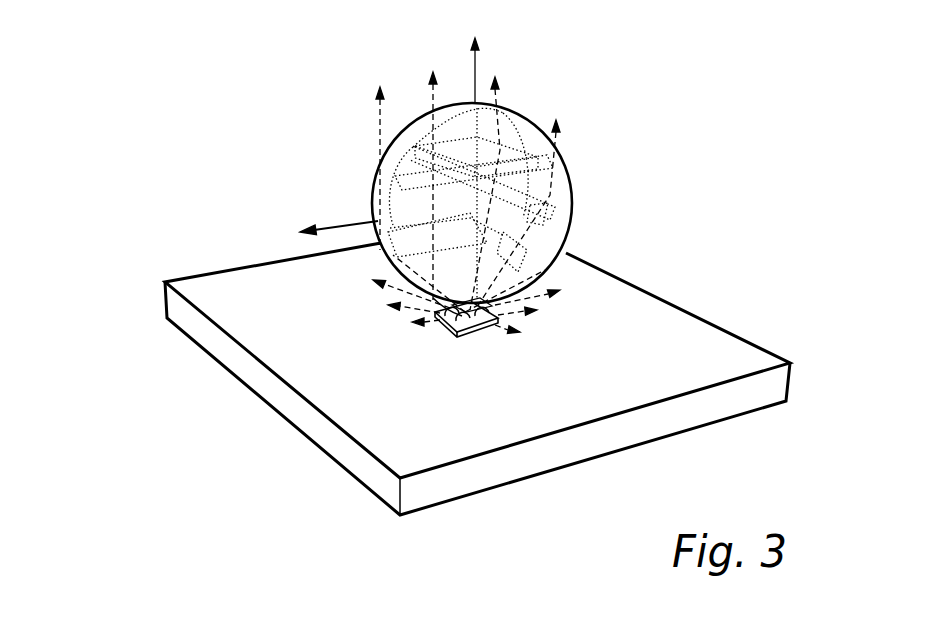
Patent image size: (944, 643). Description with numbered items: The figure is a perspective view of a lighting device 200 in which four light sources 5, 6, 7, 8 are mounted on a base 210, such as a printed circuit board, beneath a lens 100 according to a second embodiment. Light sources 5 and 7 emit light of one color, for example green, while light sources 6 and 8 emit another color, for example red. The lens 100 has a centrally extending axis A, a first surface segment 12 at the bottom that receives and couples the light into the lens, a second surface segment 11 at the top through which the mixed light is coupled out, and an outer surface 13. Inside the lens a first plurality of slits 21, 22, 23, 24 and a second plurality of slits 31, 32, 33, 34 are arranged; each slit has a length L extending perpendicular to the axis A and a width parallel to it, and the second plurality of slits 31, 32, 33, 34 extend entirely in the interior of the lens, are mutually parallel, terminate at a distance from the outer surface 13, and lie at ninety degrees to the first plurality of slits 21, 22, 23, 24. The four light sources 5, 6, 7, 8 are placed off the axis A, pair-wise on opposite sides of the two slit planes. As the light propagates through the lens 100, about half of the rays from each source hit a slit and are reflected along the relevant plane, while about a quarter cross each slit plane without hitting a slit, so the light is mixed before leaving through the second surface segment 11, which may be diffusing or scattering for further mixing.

The lighting device 200 is at (183, 182).
The base 210 is at (194, 322).
The lens 100 is at (374, 190).
The centrally extending axis A is at (479, 60).
The length L is at (342, 228).
The second surface part or segment 11 is at (473, 103).
The first surface part or segment 12 is at (541, 270).
The outer surface 13 is at (566, 238).
The first plurality of slits 21 is at (433, 110).
The first plurality of slits 22 is at (425, 158).
The first plurality of slits 23 is at (423, 212).
The first plurality of slits 24 is at (392, 263).
The second plurality of slits 31 is at (510, 138).
The second plurality of slits 32 is at (530, 197).
The second plurality of slits 33 is at (562, 243).
The second plurality of slits 34 is at (433, 298).
The light source 5 is at (437, 323).
The light source 6 is at (463, 330).
The light source 7 is at (488, 330).
The light source 8 is at (473, 330).